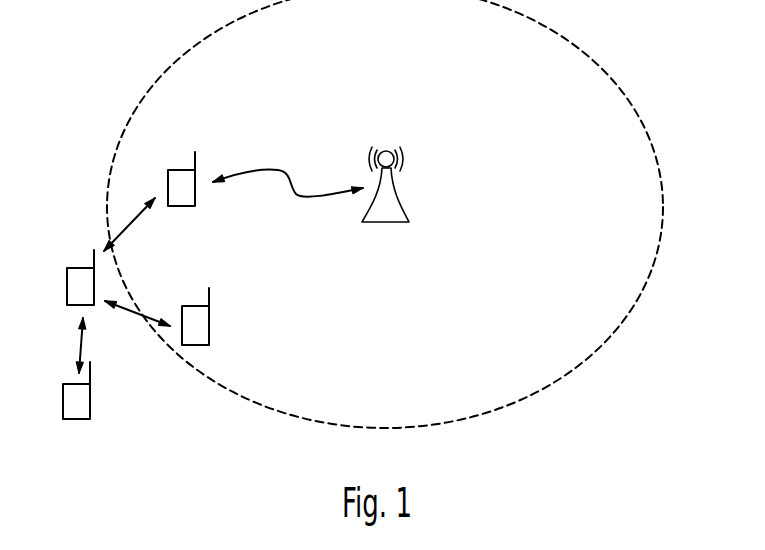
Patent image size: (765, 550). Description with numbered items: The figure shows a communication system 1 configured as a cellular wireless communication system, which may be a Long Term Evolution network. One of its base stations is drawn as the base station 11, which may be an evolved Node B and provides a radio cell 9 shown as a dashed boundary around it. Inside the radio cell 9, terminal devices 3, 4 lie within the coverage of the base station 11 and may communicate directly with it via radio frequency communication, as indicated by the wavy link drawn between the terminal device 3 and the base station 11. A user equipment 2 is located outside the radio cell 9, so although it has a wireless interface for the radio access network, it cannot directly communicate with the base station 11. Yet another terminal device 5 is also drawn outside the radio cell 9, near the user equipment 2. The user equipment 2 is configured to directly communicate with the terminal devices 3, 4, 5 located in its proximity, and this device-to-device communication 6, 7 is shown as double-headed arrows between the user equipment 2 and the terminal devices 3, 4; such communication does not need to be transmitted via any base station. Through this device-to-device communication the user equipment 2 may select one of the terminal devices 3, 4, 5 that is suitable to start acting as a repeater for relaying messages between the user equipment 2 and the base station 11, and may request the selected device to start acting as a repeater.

The communication system 1 is at (77, 40).
The user equipment 2 is at (67, 307).
The terminal device 3 is at (168, 208).
The terminal device 4 is at (182, 346).
The terminal device 5 is at (63, 421).
The device-to-device communication 6 is at (133, 313).
The device-to-device communication 7 is at (125, 229).
The radio cell 9 is at (617, 82).
The base station 11 is at (362, 222).